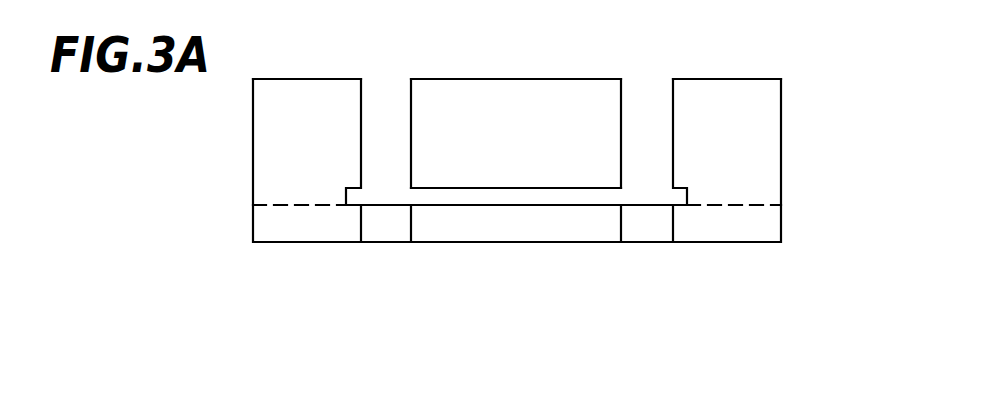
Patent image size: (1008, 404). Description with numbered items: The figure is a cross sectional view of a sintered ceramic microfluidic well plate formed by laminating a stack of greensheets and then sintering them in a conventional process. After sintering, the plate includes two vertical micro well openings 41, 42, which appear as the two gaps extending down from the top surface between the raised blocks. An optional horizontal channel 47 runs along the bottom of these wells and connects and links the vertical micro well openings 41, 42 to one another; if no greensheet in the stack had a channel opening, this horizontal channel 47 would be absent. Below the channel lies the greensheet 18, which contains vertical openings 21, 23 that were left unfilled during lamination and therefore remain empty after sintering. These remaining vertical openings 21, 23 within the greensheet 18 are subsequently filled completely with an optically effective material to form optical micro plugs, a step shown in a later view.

The greensheet 18 is at (782, 224).
The vertical opening 21 is at (385, 243).
The vertical opening 23 is at (645, 243).
The vertical micro well opening 41 is at (388, 96).
The vertical micro well opening 42 is at (650, 93).
The horizontal channel 47 is at (513, 206).